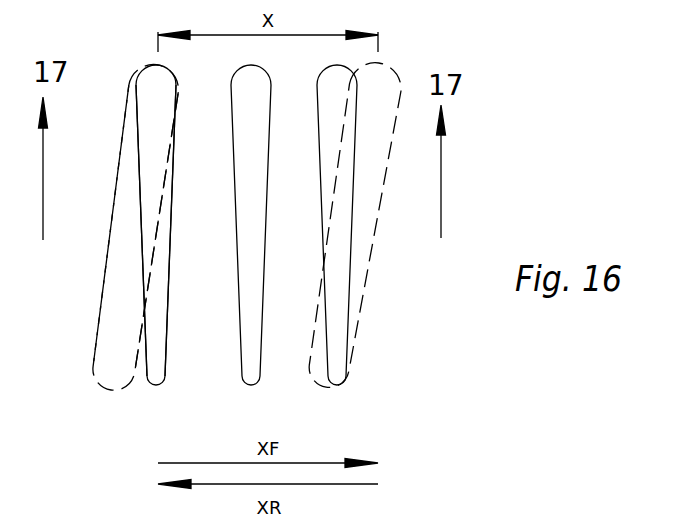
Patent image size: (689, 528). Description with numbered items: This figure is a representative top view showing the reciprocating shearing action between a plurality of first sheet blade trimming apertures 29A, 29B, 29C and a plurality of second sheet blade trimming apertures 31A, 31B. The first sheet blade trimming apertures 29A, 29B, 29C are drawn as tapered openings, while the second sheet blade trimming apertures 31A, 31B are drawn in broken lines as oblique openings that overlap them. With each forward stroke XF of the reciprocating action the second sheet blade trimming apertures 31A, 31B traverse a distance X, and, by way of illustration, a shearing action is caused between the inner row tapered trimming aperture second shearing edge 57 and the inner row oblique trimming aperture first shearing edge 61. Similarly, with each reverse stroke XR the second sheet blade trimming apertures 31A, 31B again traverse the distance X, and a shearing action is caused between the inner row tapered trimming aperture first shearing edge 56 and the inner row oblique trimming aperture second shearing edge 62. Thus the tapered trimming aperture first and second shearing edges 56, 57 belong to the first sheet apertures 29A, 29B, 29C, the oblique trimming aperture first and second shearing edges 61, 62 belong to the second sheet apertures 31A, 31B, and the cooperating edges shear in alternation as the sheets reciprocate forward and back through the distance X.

The first sheet blade trimming aperture 29A is at (164, 317).
The first sheet blade trimming aperture 29B is at (252, 247).
The first sheet blade trimming aperture 29C is at (338, 322).
The second sheet blade trimming aperture 31A is at (100, 362).
The second sheet blade trimming aperture 31B is at (352, 345).
The inner row tapered trimming aperture first shearing edge 56 is at (140, 155).
The inner row tapered trimming aperture second shearing edge 57 is at (169, 261).
The inner row oblique trimming aperture first shearing edge 61 is at (113, 205).
The inner row oblique trimming aperture second shearing edge 62 is at (162, 213).